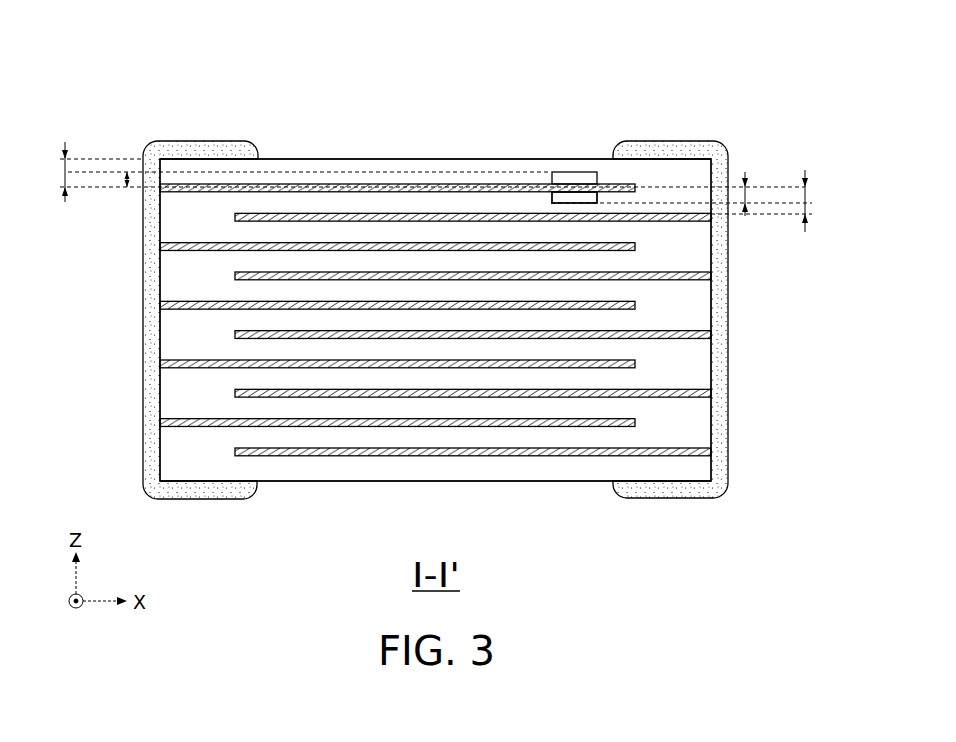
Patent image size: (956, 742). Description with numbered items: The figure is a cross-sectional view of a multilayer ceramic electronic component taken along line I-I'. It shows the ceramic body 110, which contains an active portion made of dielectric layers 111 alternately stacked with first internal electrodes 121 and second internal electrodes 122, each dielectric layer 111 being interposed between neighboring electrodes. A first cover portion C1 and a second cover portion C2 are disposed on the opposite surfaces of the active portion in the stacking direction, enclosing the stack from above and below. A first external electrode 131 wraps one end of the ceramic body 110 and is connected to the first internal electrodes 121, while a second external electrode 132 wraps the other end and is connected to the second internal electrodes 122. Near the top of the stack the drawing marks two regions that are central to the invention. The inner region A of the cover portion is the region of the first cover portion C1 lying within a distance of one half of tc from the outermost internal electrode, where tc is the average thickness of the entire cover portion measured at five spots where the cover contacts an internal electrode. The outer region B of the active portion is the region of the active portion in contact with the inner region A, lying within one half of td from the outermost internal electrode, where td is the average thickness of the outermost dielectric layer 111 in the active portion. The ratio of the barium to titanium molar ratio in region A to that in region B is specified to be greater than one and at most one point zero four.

The ceramic body 110 is at (435, 314).
The dielectric layer 111 is at (517, 405).
The first internal electrode 121 is at (372, 393).
The second internal electrode 122 is at (412, 422).
The first external electrode 131 is at (198, 148).
The second external electrode 132 is at (670, 148).
The first cover portion C1 is at (345, 165).
The second cover portion C2 is at (307, 468).
The inner region of the cover portion A is at (567, 172).
The outer region of the active portion B is at (550, 197).
The average thickness of the cover portion tc is at (55, 172).
The average thickness of the outermost dielectric layer td is at (817, 201).